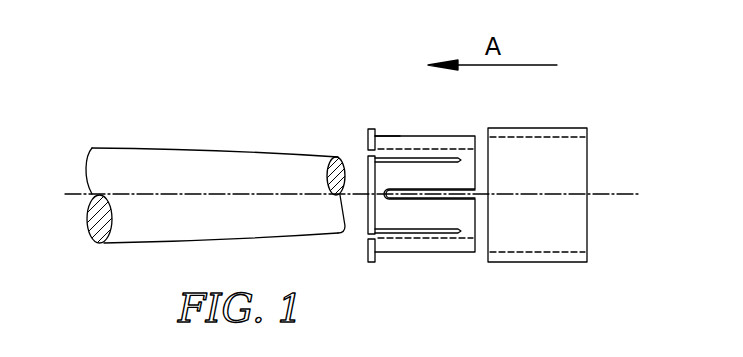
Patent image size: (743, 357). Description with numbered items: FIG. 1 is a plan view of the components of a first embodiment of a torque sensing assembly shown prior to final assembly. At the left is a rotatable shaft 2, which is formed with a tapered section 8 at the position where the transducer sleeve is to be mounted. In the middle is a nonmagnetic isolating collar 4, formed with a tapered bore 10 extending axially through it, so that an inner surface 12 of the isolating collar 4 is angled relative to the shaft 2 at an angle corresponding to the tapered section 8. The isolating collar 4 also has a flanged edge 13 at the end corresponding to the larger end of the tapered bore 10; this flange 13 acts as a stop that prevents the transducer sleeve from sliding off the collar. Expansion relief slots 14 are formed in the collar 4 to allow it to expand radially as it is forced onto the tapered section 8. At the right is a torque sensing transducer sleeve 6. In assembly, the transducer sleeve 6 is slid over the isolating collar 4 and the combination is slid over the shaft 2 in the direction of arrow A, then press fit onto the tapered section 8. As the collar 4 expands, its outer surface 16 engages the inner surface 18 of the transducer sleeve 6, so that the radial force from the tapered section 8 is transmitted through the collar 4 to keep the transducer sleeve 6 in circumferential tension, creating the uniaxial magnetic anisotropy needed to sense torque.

The rotatable shaft 2 is at (204, 205).
The nonmagnetic isolating collar 4 is at (402, 188).
The torque sensing transducer sleeve 6 is at (588, 234).
The tapered section 8 is at (155, 155).
The tapered bore 10 is at (368, 222).
The inner surface 12 is at (394, 162).
The flanged edge 13 is at (377, 131).
The expansion relief slots 14 is at (407, 195).
The outer surface 16 is at (433, 135).
The inner surface 18 is at (560, 137).